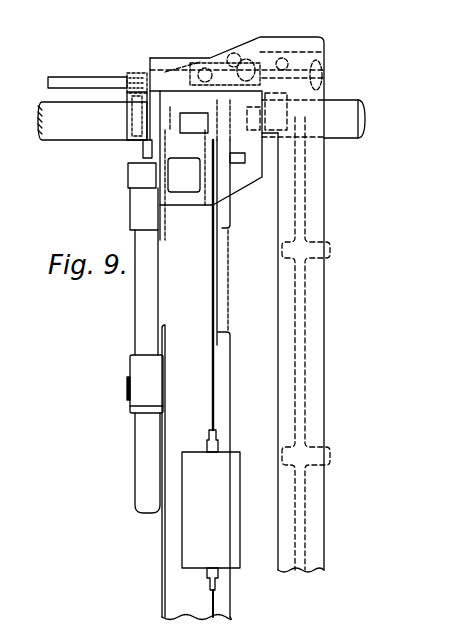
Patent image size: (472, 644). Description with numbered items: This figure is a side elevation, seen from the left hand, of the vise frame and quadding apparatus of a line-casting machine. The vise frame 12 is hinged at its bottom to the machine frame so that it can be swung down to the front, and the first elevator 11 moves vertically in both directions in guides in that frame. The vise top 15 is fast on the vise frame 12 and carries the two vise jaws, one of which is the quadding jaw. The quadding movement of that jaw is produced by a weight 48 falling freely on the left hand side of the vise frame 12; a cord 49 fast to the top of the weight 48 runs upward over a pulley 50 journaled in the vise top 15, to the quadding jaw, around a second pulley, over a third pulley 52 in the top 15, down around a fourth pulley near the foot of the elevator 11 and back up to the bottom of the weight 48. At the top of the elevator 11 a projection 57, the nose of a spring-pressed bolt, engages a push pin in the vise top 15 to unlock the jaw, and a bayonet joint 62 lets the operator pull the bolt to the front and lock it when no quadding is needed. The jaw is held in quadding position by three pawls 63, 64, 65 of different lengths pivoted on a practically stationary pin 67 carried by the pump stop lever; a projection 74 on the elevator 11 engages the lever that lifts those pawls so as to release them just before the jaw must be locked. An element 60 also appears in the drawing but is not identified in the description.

The first elevator 11 is at (324, 225).
The vise frame 12 is at (163, 550).
The vise top 15 is at (248, 152).
The weight 48 is at (211, 510).
The cord 49 is at (211, 283).
The pulley 50 is at (212, 149).
The third pulley 52 is at (184, 175).
The projection 57 is at (327, 86).
The cam 60 is at (318, 62).
The bayonet joint 62 is at (262, 55).
The pawl 63 is at (128, 78).
The pawl 64 is at (140, 93).
The pawl 65 is at (141, 75).
The pin 67 is at (128, 93).
The projection 74 is at (197, 70).